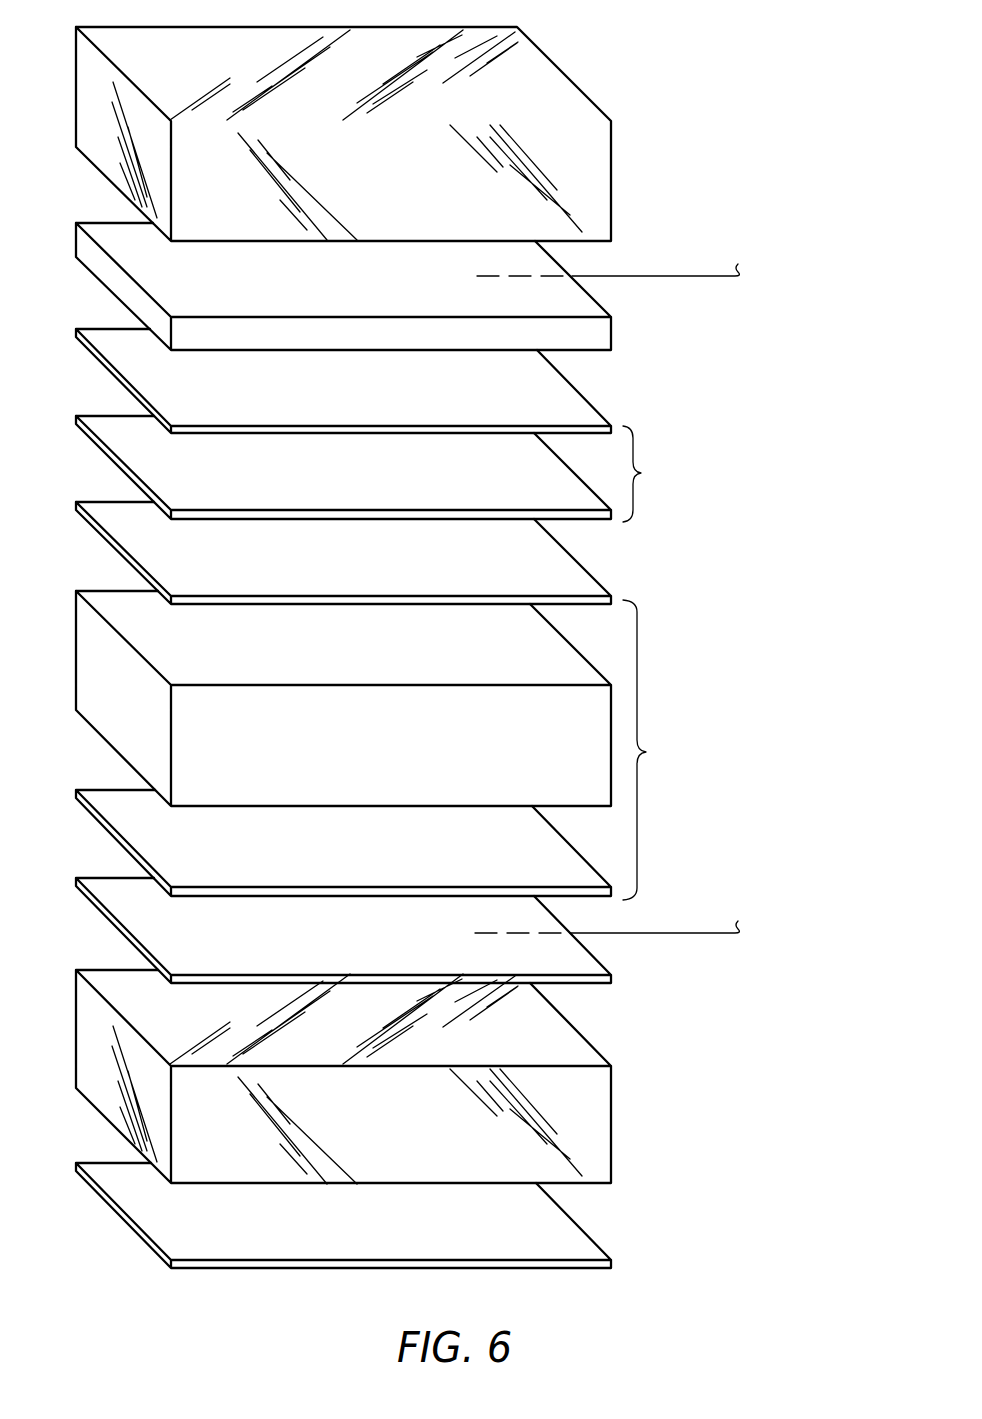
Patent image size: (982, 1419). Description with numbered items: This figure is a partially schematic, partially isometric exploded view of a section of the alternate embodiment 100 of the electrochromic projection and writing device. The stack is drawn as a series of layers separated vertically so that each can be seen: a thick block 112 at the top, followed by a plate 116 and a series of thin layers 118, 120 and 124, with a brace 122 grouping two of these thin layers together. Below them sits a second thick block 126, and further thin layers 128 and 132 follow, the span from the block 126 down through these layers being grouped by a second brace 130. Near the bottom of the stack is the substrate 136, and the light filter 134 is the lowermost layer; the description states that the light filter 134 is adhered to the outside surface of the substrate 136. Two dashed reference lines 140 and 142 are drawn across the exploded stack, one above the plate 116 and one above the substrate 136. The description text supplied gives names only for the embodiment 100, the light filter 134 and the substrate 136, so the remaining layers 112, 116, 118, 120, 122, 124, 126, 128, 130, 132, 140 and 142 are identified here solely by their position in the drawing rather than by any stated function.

The alternate embodiment 100 is at (710, 72).
The first glass substrate 112 is at (108, 162).
The first plate 116 is at (90, 265).
The first thin layer 118 is at (90, 352).
The second thin layer 120 is at (92, 442).
The layer group 122 is at (652, 474).
The third thin layer 124 is at (92, 528).
The middle block 126 is at (107, 725).
The fourth thin layer 128 is at (90, 813).
The cell group 130 is at (656, 750).
The fifth thin layer 132 is at (77, 893).
The light filter 134 is at (82, 1178).
The substrate 136 is at (107, 1105).
The first axis 140 is at (662, 276).
The second axis 142 is at (677, 933).